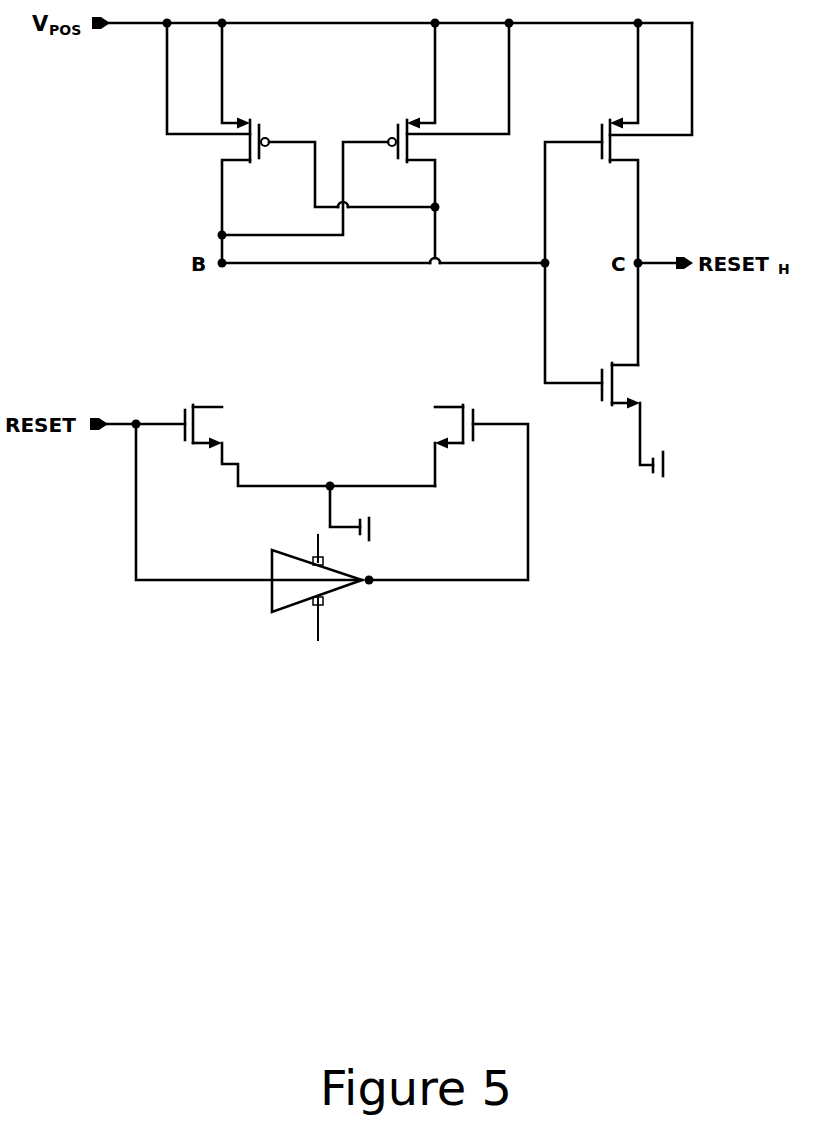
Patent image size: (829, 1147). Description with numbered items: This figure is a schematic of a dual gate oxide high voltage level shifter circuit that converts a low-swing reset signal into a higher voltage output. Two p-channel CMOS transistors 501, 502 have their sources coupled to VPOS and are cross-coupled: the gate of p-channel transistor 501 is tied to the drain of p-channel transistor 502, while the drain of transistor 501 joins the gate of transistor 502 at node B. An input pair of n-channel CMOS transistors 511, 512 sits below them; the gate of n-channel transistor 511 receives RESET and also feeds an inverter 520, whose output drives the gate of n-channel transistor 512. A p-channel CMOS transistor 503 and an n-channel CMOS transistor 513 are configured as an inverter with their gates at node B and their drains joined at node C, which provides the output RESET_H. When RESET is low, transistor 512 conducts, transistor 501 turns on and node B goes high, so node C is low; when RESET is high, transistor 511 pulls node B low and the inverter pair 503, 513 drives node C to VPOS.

The p-channel CMOS transistor 501 is at (255, 128).
The p-channel CMOS transistor 502 is at (408, 125).
The p-channel CMOS transistor 503 is at (611, 125).
The n-channel CMOS transistor 511 is at (190, 405).
The n-channel CMOS transistor 512 is at (469, 407).
The n-channel CMOS transistor 513 is at (604, 368).
The inverter 520 is at (272, 598).